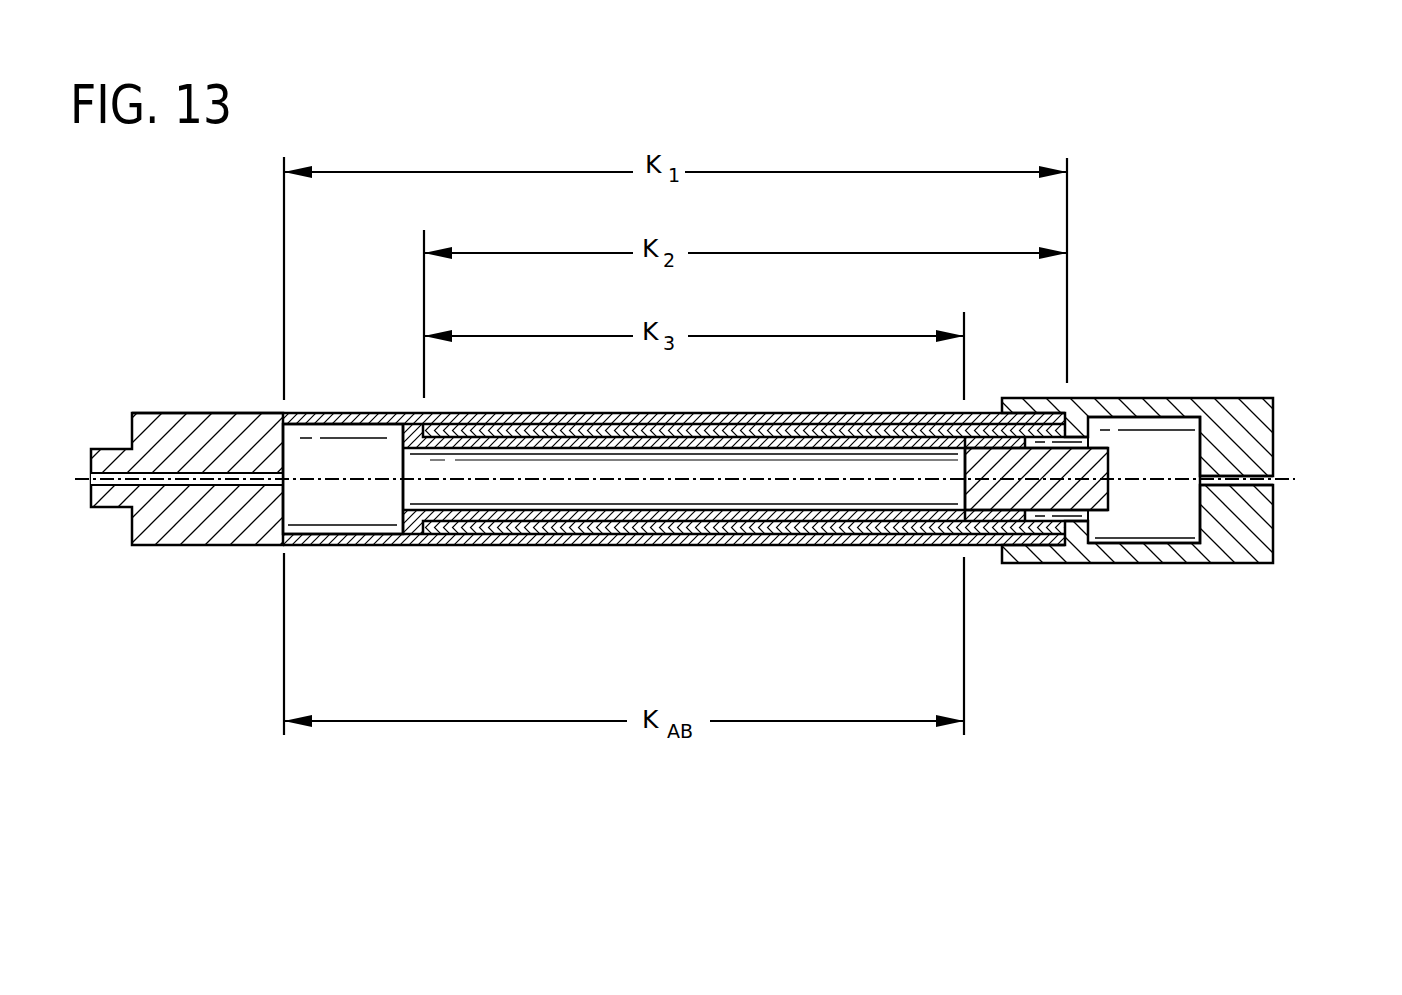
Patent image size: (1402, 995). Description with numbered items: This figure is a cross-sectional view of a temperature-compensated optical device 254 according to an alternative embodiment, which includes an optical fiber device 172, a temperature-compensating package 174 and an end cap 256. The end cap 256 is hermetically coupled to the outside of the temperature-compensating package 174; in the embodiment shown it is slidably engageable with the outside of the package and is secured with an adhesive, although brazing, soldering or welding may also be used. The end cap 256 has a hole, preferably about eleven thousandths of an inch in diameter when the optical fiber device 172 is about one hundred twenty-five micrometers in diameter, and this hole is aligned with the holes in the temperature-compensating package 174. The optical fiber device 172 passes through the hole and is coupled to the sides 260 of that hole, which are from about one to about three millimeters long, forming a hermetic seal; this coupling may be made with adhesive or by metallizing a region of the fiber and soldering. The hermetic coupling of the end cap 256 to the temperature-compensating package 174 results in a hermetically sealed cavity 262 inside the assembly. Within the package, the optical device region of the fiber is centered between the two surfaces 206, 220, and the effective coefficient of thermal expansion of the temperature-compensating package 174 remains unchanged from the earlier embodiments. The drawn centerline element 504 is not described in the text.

The temperature-compensated optical device 254 is at (230, 357).
The temperature-compensating package 174 is at (227, 545).
The surface 206 is at (283, 517).
The surface 220 is at (953, 515).
The hermetically sealed cavity 262 is at (808, 497).
The end cap 256 is at (1273, 417).
The sides of the hole 260 is at (1273, 528).
The optical fiber device 172 is at (1280, 477).
The optical fiber 504 is at (1282, 481).